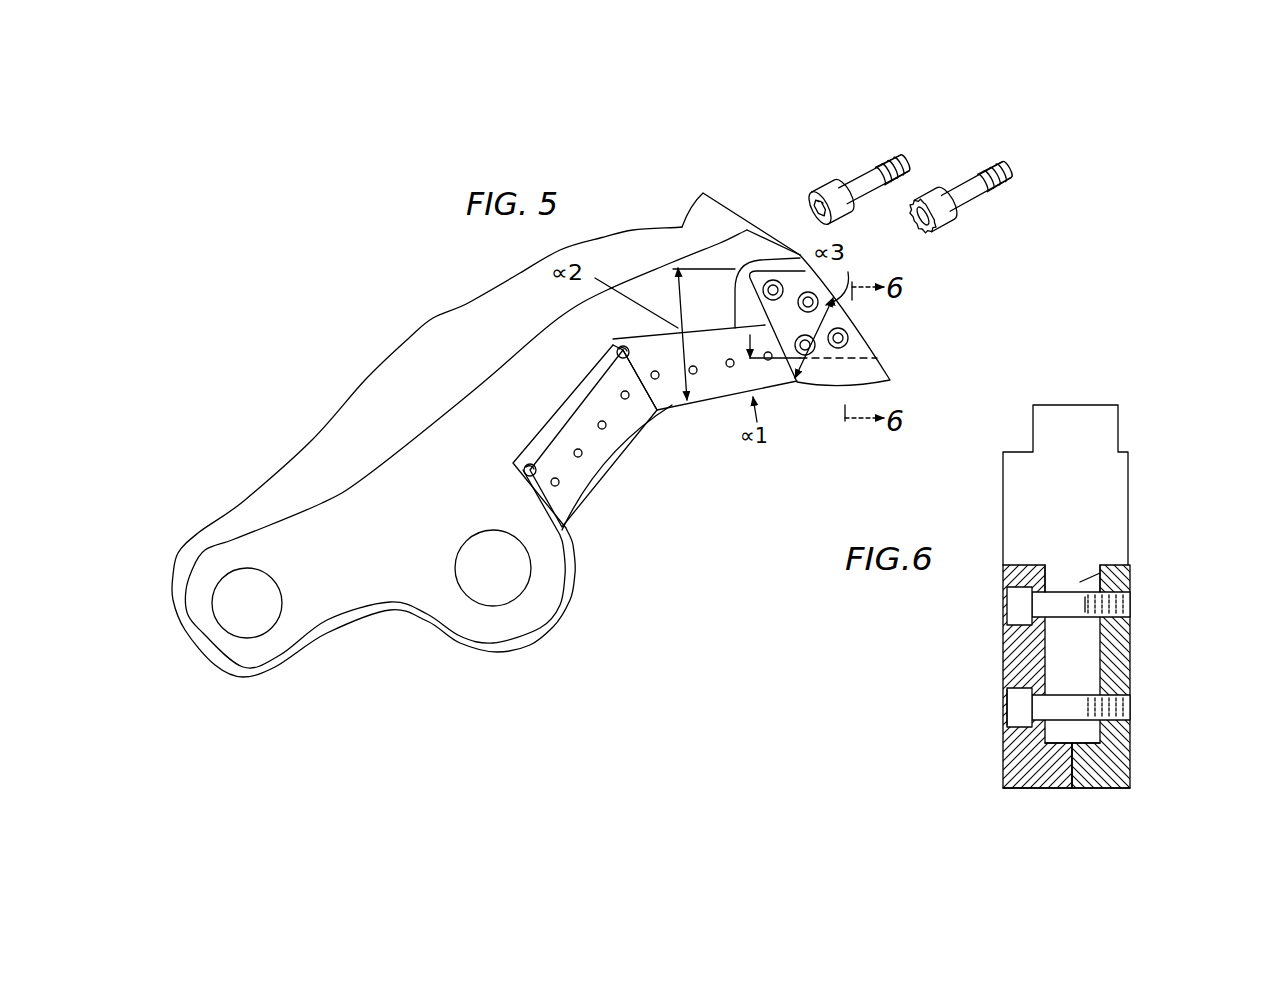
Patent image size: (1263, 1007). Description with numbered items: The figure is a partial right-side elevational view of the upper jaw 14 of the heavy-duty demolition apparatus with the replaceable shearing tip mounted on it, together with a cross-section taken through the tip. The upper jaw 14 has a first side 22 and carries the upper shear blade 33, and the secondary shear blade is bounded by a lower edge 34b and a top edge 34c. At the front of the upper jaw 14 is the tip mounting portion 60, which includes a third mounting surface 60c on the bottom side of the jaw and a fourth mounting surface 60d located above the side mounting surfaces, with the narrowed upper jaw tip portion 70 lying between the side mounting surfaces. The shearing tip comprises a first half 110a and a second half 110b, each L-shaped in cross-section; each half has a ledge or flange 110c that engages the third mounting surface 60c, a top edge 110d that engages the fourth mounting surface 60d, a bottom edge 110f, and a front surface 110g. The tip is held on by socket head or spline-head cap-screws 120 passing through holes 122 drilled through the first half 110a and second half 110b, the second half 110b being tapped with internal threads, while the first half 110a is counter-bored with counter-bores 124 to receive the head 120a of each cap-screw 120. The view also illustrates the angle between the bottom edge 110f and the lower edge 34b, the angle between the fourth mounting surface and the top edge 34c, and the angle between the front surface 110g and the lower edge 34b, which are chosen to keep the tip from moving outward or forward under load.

In FIG. 5, the upper jaw 14 is at (378, 362).
In FIG. 5, the first side 22 is at (482, 462).
In FIG. 5, the upper shear blade 33 is at (607, 473).
In FIG. 5, the lower edge 34b is at (693, 405).
In FIG. 5, the top edge 34c is at (717, 330).
In FIG. 5, the top edge 110d is at (800, 255).
In FIG. 6, the top edge 110d is at (1045, 580).
In FIG. 5, the front surface 110g is at (873, 338).
In FIG. 5, the cap-screw 120 is at (976, 147).
In FIG. 6, the cap-screw 120 is at (1007, 708).
In FIG. 6, the head 120a is at (1012, 718).
In FIG. 6, the hole 122 is at (1130, 583).
In FIG. 6, the counter-bore 124 is at (1013, 702).
In FIG. 6, the first half 110a is at (1003, 752).
In FIG. 6, the second half 110b is at (1130, 658).
In FIG. 6, the ledge or flange 110c is at (1045, 745).
In FIG. 6, the bottom edge 110f is at (1035, 788).
In FIG. 6, the tip mounting portion 60 is at (1164, 660).
In FIG. 6, the narrowed upper jaw tip portion 70 is at (1130, 568).
In FIG. 6, the third mounting surface 60c is at (1100, 736).
In FIG. 6, the fourth mounting surface 60d is at (1040, 565).